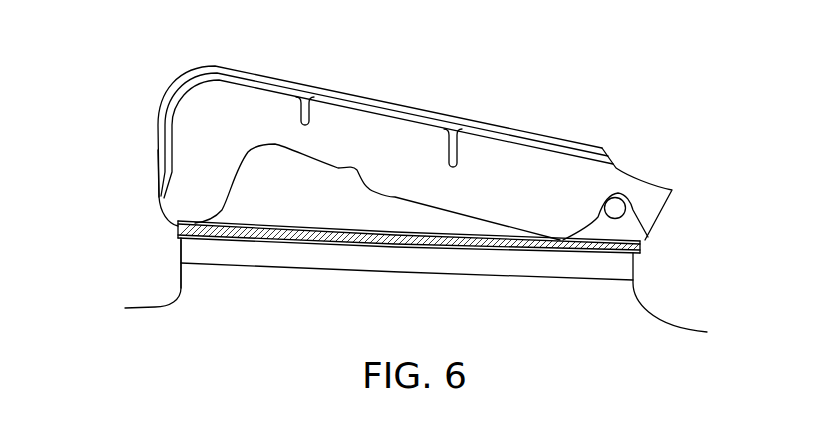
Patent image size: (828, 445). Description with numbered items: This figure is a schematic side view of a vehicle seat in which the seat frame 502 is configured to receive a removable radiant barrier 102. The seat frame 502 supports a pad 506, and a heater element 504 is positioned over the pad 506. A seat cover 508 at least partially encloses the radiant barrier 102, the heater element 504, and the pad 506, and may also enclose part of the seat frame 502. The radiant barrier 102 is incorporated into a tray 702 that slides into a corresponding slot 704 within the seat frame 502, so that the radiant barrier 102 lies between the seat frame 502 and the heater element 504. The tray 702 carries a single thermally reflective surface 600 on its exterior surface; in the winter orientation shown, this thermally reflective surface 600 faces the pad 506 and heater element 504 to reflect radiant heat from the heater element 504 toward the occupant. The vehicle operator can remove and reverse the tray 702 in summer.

The radiant barrier 102 is at (177, 233).
The seat frame 502 is at (640, 237).
The heater element 504 is at (160, 163).
The pad 506 is at (345, 124).
The seat cover 508 is at (287, 78).
The thermally reflective surface 600 is at (636, 250).
The tray 702 is at (173, 245).
The slot 704 is at (242, 239).